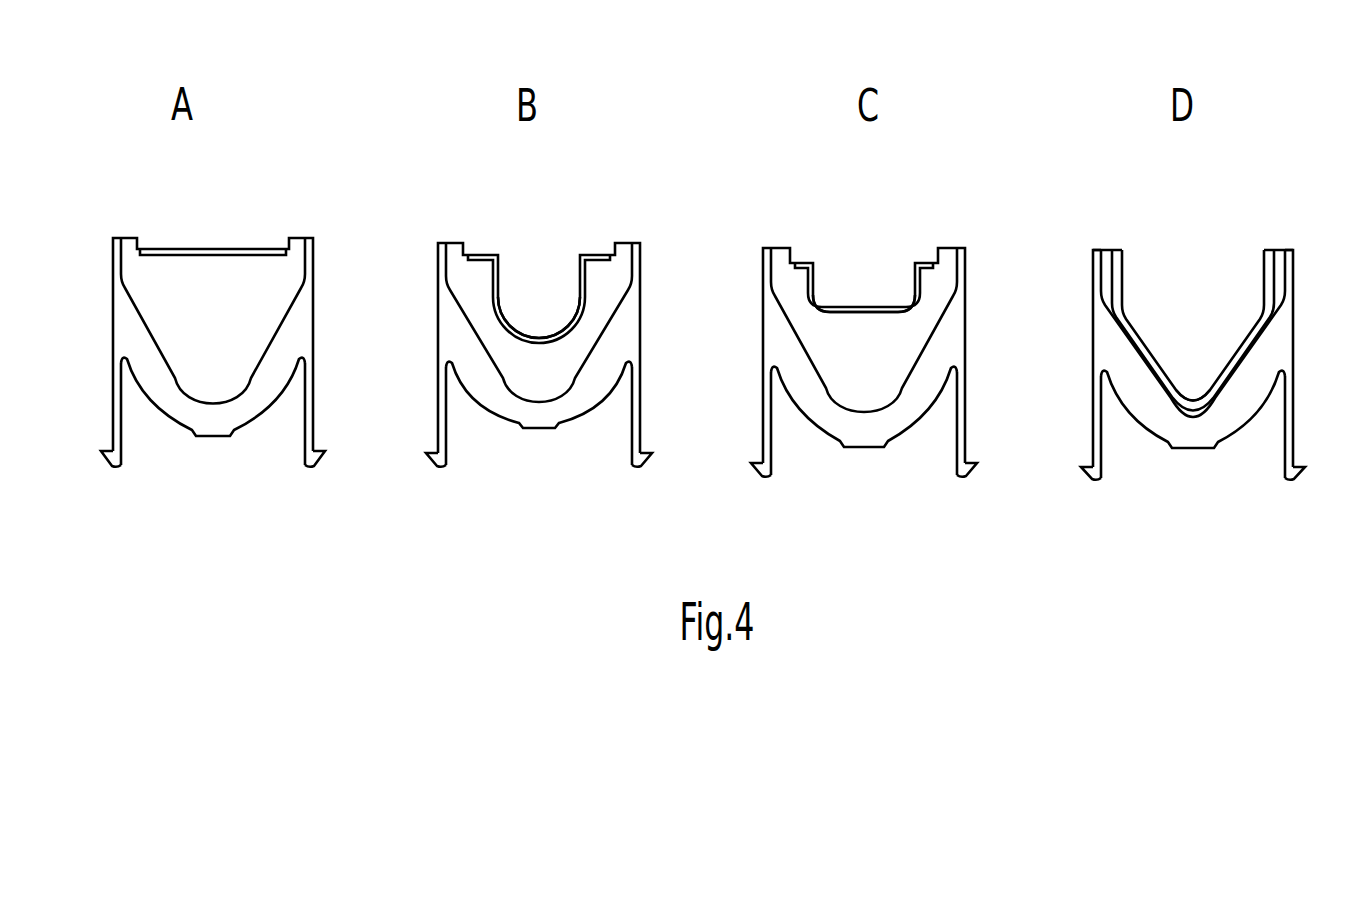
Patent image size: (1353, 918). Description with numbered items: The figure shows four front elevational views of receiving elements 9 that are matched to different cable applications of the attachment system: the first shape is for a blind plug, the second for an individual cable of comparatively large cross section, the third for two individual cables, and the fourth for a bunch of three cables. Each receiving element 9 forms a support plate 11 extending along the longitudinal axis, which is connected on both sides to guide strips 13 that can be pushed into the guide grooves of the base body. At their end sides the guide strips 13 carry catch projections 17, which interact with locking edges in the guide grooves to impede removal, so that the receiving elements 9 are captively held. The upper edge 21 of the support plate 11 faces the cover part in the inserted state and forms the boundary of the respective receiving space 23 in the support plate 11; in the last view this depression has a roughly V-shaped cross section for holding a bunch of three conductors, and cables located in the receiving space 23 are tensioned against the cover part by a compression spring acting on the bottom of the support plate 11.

In FIG. 4A, the receiving element 9 is at (315, 292).
In FIG. 4B, the receiving element 9 is at (440, 292).
In FIG. 4C, the receiving element 9 is at (967, 332).
In FIG. 4D, the receiving element 9 is at (1093, 320).
In FIG. 4A, the support plate 11 is at (168, 364).
In FIG. 4B, the support plate 11 is at (500, 380).
In FIG. 4C, the support plate 11 is at (825, 382).
In FIG. 4D, the support plate 11 is at (1160, 385).
In FIG. 4A, the guide strip 13 is at (110, 357).
In FIG. 4B, the guide strip 13 is at (368, 383).
In FIG. 4C, the guide strip 13 is at (695, 390).
In FIG. 4D, the guide strip 13 is at (1028, 408).
In FIG. 4A, the catch projection 17 is at (102, 453).
In FIG. 4B, the catch projection 17 is at (428, 457).
In FIG. 4C, the catch projection 17 is at (692, 517).
In FIG. 4D, the catch projection 17 is at (1017, 520).
In FIG. 4A, the upper edge 21 is at (230, 250).
In FIG. 4B, the upper edge 21 is at (557, 305).
In FIG. 4C, the upper edge 21 is at (840, 306).
In FIG. 4D, the upper edge 21 is at (1233, 350).
In FIG. 4B, the receiving space 23 is at (524, 283).
In FIG. 4C, the receiving space 23 is at (889, 285).
In FIG. 4D, the receiving space 23 is at (1165, 342).